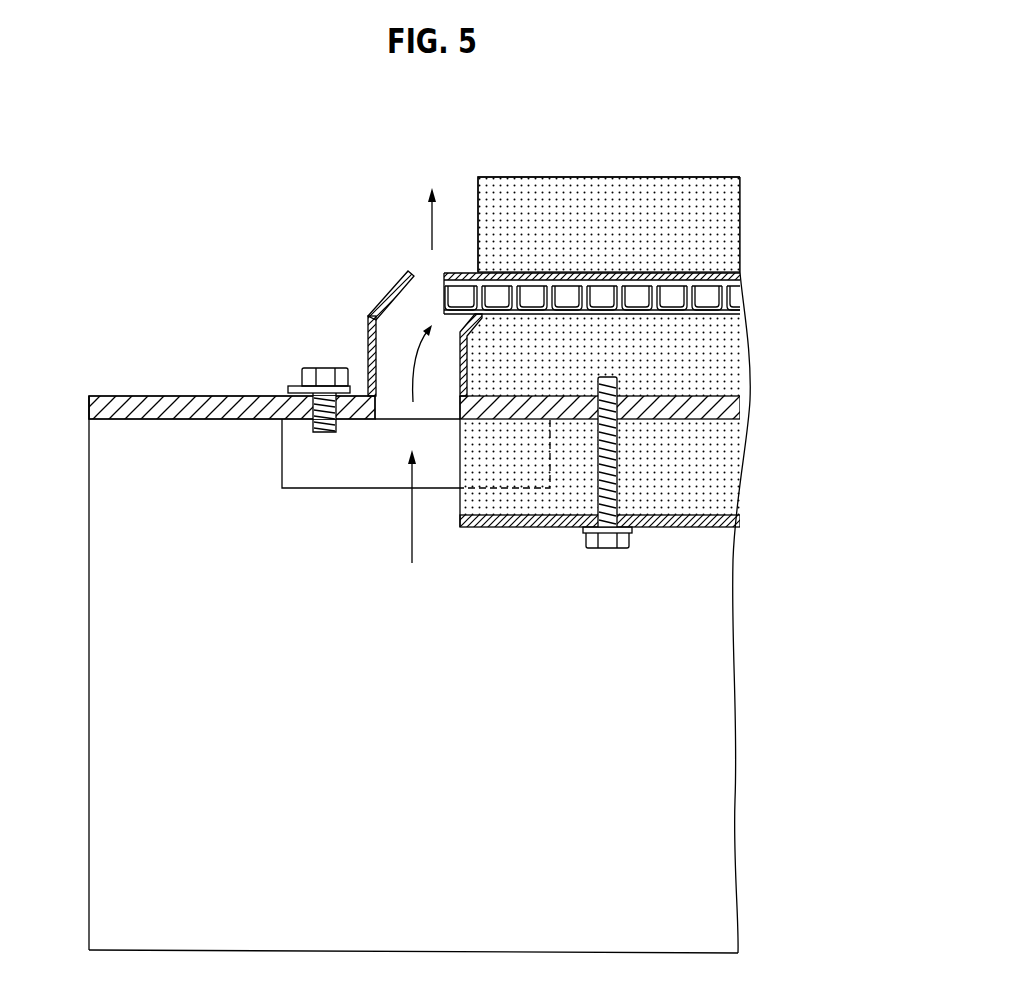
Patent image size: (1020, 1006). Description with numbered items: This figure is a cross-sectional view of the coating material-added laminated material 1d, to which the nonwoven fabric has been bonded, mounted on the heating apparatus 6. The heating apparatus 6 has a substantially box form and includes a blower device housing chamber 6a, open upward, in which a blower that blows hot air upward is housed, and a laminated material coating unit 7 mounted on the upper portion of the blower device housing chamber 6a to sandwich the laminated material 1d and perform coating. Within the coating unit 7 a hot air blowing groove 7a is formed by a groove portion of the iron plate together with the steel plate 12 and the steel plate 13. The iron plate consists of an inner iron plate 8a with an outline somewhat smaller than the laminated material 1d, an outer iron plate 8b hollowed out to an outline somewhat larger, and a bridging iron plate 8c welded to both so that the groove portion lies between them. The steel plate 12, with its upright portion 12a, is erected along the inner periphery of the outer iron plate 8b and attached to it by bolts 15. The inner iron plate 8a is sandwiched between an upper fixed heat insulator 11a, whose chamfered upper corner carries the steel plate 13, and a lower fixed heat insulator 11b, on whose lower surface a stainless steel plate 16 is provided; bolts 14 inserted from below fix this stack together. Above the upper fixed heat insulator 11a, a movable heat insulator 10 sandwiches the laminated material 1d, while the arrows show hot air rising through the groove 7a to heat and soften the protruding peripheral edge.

The heating apparatus 6 is at (320, 204).
The blower device housing chamber 6a is at (84, 587).
The laminated material coating unit 7 is at (84, 402).
The hot air blowing groove 7a is at (407, 366).
The inner iron plate 8a is at (733, 412).
The outer iron plate 8b is at (191, 394).
The bridging iron plate 8c is at (316, 489).
The movable heat insulator 10 is at (707, 226).
The coating material-added laminated material 1d is at (752, 291).
The upper fixed heat insulator 11a is at (707, 355).
The lower fixed heat insulator 11b is at (707, 470).
The steel plate 12 is at (398, 286).
The upright portion 12a is at (367, 332).
The steel plate 13 is at (458, 367).
The bolts 14 is at (607, 549).
The bolts 15 is at (322, 370).
The stainless steel plate 16 is at (733, 522).